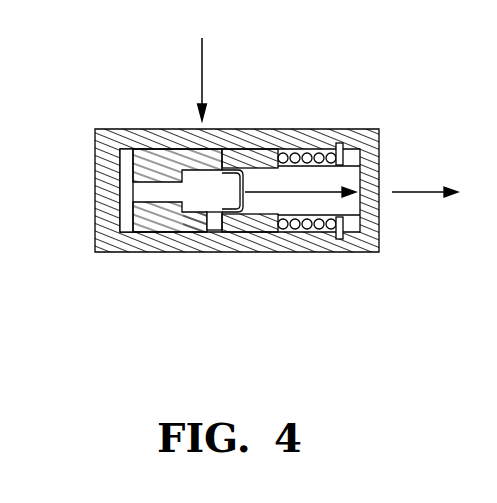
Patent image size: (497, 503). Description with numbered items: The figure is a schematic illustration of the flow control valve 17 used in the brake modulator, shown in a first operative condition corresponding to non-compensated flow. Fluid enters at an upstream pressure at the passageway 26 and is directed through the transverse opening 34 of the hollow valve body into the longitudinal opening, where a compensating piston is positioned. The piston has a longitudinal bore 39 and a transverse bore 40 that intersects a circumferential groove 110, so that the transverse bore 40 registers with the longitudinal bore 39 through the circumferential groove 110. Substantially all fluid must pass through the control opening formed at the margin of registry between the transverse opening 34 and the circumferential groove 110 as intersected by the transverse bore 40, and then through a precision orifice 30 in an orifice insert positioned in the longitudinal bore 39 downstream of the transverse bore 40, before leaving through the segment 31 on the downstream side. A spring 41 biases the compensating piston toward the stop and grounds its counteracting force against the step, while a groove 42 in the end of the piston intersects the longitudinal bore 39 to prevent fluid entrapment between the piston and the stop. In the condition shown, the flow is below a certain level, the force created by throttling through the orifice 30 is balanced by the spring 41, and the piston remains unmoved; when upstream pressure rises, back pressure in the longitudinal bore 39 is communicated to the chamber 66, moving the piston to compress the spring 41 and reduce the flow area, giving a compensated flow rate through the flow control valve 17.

The flow control valve 17 is at (306, 137).
The passageway 26 is at (202, 56).
The precision orifice 30 is at (245, 198).
The segment 31 is at (413, 192).
The transverse opening 34 is at (205, 148).
The longitudinal bore 39 is at (186, 212).
The transverse bore 40 is at (233, 190).
The spring 41 is at (330, 157).
The groove 42 is at (155, 212).
The chamber 66 is at (130, 170).
The circumferential groove 110 is at (223, 230).